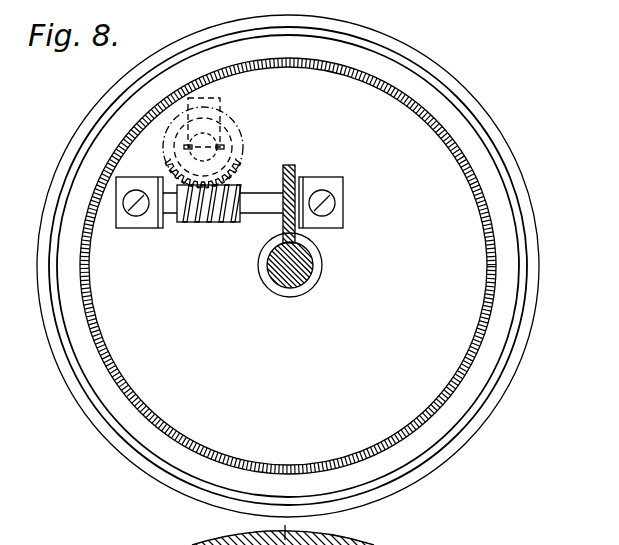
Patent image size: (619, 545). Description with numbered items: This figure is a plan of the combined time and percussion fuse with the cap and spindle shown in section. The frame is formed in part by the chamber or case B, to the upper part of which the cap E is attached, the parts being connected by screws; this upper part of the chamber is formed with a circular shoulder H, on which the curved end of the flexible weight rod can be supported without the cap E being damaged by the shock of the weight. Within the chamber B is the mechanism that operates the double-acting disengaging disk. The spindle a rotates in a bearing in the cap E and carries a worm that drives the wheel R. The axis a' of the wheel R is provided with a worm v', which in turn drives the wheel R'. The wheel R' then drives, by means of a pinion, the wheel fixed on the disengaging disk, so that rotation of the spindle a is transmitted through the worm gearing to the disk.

The circular shoulder H is at (62, 249).
The cap E is at (92, 320).
The chamber or case B is at (443, 468).
The spindle a is at (289, 265).
The axis of the wheel R a' is at (223, 192).
The worm v' is at (209, 215).
The wheel R is at (288, 197).
The wheel R' is at (221, 143).